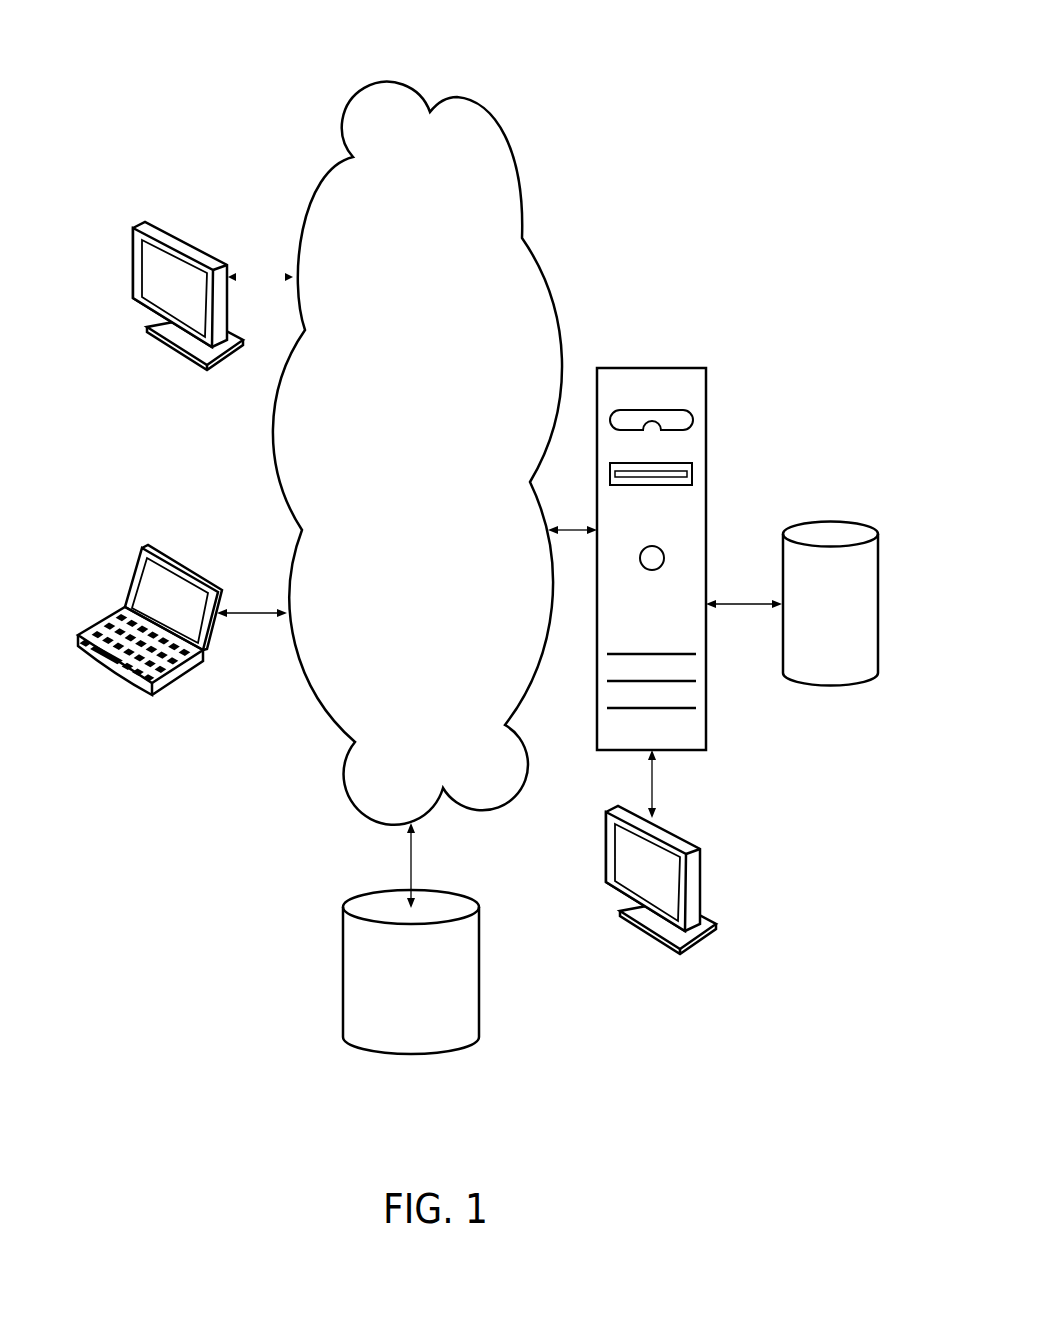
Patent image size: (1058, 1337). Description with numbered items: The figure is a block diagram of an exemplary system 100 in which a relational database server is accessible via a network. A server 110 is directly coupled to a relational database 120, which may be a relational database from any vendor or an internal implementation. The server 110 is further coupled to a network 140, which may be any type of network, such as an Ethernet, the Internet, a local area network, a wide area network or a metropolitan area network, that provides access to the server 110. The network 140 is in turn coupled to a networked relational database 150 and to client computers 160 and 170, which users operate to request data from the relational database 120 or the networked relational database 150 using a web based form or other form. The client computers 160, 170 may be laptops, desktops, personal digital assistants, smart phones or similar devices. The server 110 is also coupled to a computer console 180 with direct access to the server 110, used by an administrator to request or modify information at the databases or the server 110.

The system 100 is at (735, 58).
The server 110 is at (670, 367).
The relational database 120 is at (803, 532).
The network 140 is at (475, 98).
The networked relational database 150 is at (342, 905).
The client computer 160 is at (160, 553).
The client computer 170 is at (178, 235).
The computer console 180 is at (688, 878).